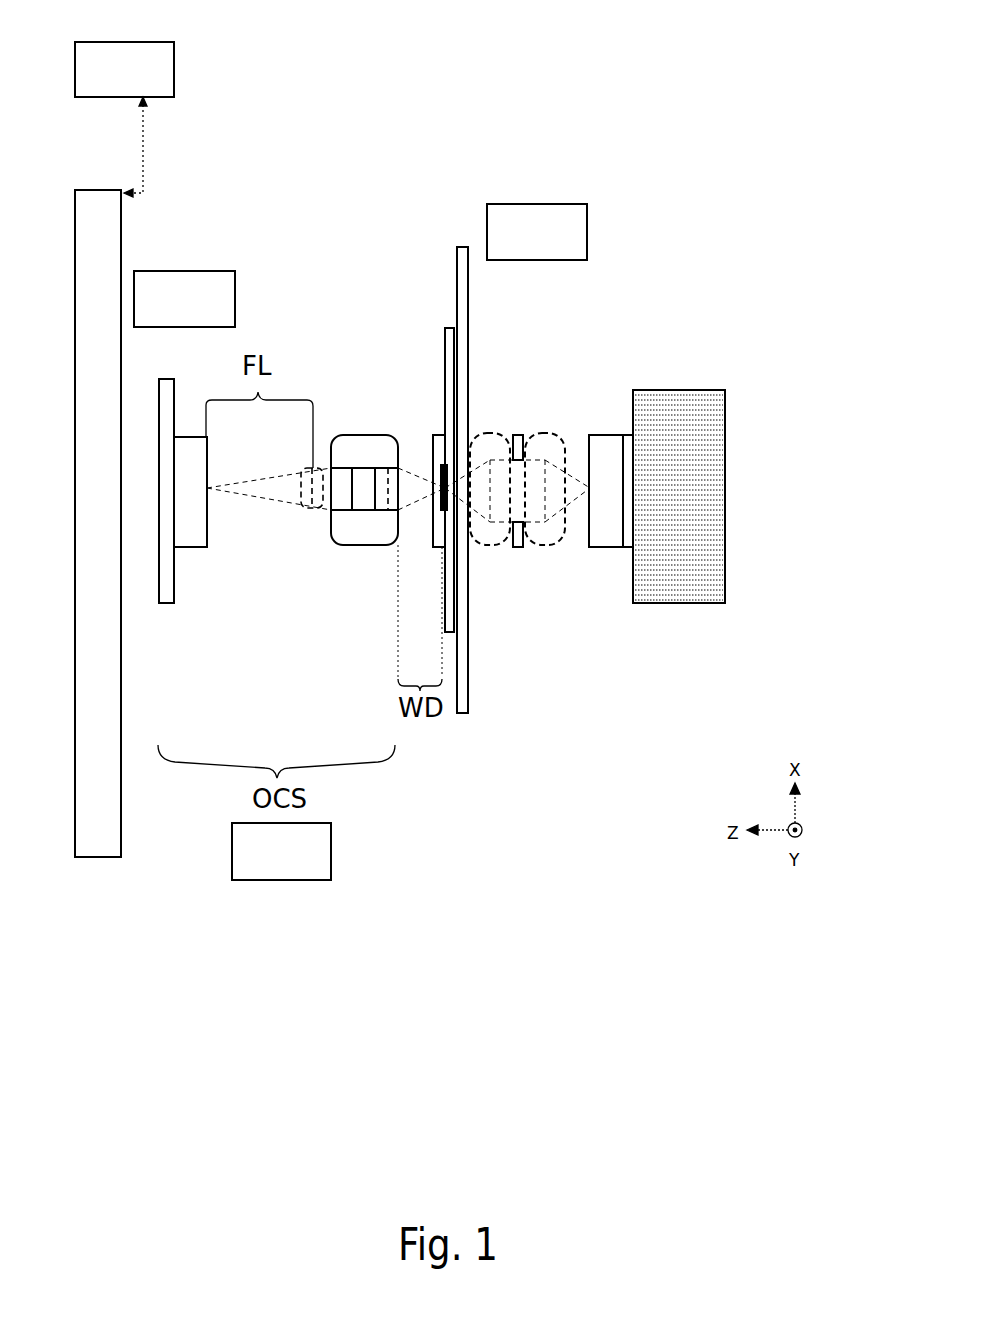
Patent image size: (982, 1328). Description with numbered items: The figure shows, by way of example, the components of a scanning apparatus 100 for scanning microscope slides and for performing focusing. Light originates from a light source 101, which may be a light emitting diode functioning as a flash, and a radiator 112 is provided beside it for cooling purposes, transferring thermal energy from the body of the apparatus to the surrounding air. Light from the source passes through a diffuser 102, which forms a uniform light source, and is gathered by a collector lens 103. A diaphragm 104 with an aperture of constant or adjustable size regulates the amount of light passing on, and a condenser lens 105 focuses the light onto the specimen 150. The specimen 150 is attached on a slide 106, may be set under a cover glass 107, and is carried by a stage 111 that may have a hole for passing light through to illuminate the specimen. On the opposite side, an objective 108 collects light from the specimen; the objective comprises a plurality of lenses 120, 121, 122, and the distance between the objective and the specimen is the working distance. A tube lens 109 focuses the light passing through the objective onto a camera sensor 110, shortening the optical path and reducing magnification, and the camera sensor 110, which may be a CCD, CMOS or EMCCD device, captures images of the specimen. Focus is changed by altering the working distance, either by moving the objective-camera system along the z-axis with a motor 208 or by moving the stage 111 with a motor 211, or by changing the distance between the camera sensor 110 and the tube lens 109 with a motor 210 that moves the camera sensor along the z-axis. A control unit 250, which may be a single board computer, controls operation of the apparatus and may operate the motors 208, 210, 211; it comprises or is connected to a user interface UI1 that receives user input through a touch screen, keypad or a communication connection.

The scanning apparatus 100 is at (636, 148).
The light source 101 is at (630, 437).
The diffuser 102 is at (597, 533).
The collector lens 103 is at (562, 443).
The diaphragm 104 is at (518, 433).
The condenser lens 105 is at (486, 535).
The slide 106 is at (447, 328).
The cover glass 107 is at (437, 435).
The objective 108 is at (367, 512).
The tube lens 109 is at (312, 510).
The camera sensor 110 is at (200, 530).
The stage 111 is at (462, 247).
The radiator 112 is at (712, 405).
The lens 120 is at (363, 505).
The lens 121 is at (339, 478).
The lens 122 is at (382, 478).
The specimen 150 is at (442, 520).
The motor 208 is at (308, 850).
The motor 210 is at (213, 290).
The motor 211 is at (535, 228).
The control unit 250 is at (118, 210).
The user interface UI1 is at (148, 78).